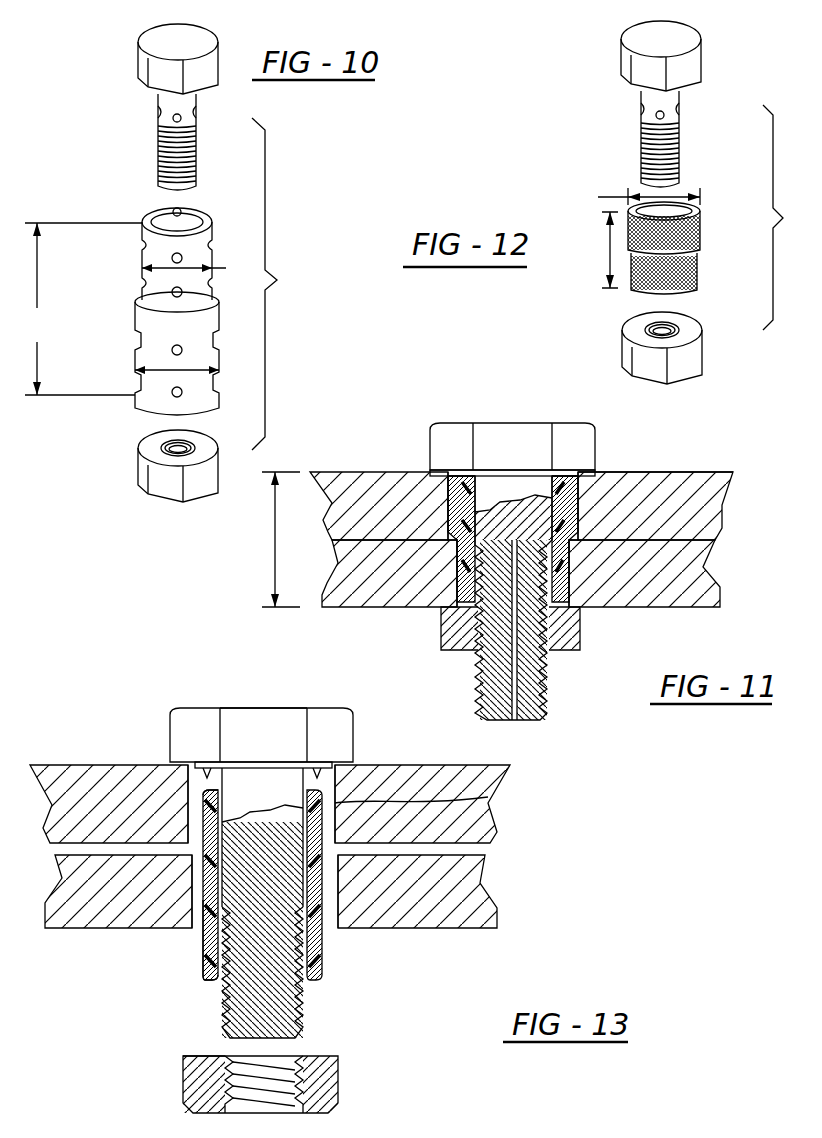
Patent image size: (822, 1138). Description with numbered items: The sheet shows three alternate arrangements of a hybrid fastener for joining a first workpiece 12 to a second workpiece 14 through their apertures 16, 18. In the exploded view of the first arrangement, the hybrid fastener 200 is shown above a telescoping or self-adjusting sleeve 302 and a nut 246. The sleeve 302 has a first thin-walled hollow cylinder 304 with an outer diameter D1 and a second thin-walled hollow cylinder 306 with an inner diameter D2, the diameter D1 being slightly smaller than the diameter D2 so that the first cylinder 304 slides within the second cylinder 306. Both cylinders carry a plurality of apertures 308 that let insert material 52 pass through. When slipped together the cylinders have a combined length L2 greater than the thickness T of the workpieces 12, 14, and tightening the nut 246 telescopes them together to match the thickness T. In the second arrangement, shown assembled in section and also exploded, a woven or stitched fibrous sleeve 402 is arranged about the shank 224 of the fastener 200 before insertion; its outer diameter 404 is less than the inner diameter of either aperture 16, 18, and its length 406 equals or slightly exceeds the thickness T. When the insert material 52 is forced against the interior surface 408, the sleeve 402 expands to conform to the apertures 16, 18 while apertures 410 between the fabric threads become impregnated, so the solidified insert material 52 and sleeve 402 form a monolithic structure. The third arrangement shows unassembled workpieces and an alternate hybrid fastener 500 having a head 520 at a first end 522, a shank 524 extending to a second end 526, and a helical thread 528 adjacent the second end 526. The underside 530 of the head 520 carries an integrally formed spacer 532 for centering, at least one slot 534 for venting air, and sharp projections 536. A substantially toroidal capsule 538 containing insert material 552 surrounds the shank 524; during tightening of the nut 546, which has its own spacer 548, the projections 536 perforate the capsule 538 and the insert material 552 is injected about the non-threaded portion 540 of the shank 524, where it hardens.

In FIG. 10, the hybrid fastener 200 is at (157, 73).
In FIG. 12, the hybrid fastener 200 is at (606, 46).
In FIG. 11, the hybrid fastener 200 is at (428, 414).
In FIG. 10, the sleeve 302 is at (123, 314).
In FIG. 10, the first thin-walled hollow cylinder 304 is at (152, 259).
In FIG. 10, the second thin-walled hollow cylinder 306 is at (137, 358).
In FIG. 10, the apertures 308 is at (178, 216).
In FIG. 10, the nut 246 is at (158, 493).
In FIG. 10, the outer diameter D1 is at (200, 268).
In FIG. 10, the inner diameter D2 is at (219, 370).
In FIG. 10, the combined length L2 is at (83, 309).
In FIG. 12, the sleeve 402 is at (700, 233).
In FIG. 11, the sleeve 402 is at (571, 549).
In FIG. 12, the outer diameter 404 is at (634, 196).
In FIG. 12, the length 406 is at (608, 252).
In FIG. 12, the interior surface 408 is at (698, 225).
In FIG. 11, the interior surface 408 is at (545, 478).
In FIG. 12, the apertures 410 is at (683, 268).
In FIG. 11, the first workpiece 12 is at (687, 505).
In FIG. 13, the first workpiece 12 is at (473, 821).
In FIG. 11, the second workpiece 14 is at (680, 573).
In FIG. 13, the second workpiece 14 is at (447, 887).
In FIG. 11, the aperture 16 is at (580, 500).
In FIG. 13, the aperture 16 is at (485, 803).
In FIG. 11, the aperture 18 is at (586, 548).
In FIG. 13, the aperture 18 is at (341, 886).
In FIG. 11, the insert material 52 is at (512, 670).
In FIG. 11, the shank 224 is at (547, 683).
In FIG. 11, the thickness T is at (278, 530).
In FIG. 13, the hybrid fastener 500 is at (167, 700).
In FIG. 13, the head 520 is at (328, 720).
In FIG. 13, the first end 522 is at (359, 722).
In FIG. 13, the shank 524 is at (215, 832).
In FIG. 13, the second end 526 is at (205, 1012).
In FIG. 13, the helical thread 528 is at (300, 1028).
In FIG. 13, the underside 530 is at (262, 778).
In FIG. 13, the spacer 532 is at (172, 762).
In FIG. 13, the slot 534 is at (353, 765).
In FIG. 13, the sharp projections 536 is at (360, 775).
In FIG. 13, the capsule 538 is at (205, 958).
In FIG. 13, the non-threaded portion 540 is at (206, 794).
In FIG. 13, the nut 546 is at (330, 1090).
In FIG. 13, the spacer 548 is at (203, 1055).
In FIG. 13, the insert material 552 is at (207, 915).